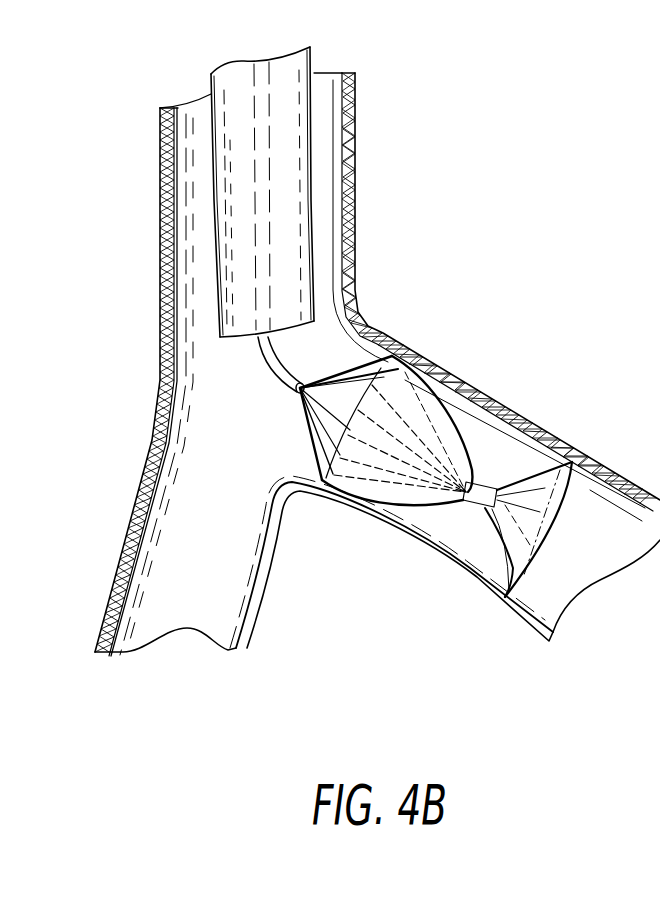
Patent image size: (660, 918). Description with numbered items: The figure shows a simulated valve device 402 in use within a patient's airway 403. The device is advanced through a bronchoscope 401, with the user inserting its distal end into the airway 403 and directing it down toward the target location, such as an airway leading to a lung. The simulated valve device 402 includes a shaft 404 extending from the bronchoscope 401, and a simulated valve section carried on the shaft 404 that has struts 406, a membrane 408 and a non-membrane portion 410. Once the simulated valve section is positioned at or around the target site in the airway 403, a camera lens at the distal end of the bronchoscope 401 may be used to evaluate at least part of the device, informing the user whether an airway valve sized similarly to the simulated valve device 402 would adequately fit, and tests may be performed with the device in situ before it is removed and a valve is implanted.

The bronchoscope 401 is at (312, 163).
The simulated valve device 402 is at (515, 388).
The airway 403 is at (357, 248).
The shaft 404 is at (283, 358).
The struts 406 is at (560, 450).
The membrane 408 is at (397, 497).
The non-membrane portion 410 is at (317, 483).